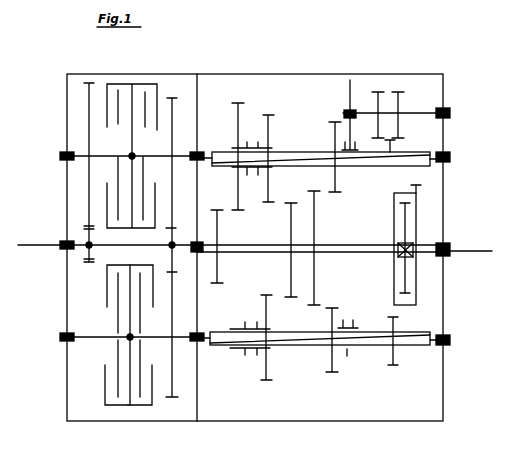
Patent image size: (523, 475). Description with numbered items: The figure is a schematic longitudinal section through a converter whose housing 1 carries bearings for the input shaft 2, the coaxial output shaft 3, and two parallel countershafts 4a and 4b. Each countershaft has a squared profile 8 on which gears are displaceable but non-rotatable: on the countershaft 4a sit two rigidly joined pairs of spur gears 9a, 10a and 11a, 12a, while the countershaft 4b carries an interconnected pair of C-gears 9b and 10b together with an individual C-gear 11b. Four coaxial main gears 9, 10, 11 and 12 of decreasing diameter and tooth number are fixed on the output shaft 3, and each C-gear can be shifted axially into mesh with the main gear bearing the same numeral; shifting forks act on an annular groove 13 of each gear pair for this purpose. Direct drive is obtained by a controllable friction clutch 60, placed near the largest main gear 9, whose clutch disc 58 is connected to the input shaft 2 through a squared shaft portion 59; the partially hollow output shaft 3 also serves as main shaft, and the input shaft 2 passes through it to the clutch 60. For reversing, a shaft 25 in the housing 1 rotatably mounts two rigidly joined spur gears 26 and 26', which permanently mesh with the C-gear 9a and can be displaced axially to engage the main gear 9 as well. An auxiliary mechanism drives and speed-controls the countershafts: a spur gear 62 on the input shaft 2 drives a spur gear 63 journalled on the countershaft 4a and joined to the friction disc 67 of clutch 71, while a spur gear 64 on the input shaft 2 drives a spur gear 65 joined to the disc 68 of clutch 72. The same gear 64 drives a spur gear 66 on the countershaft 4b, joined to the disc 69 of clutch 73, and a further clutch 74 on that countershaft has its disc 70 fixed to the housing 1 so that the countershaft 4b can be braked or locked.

The housing 1 is at (305, 74).
The input shaft 2 is at (22, 245).
The output shaft 3 is at (464, 252).
The countershaft 4a is at (186, 156).
The countershaft 4b is at (185, 338).
The squared profile 8 is at (413, 163).
The main gear 9 is at (421, 186).
The spur gear 9a is at (392, 148).
The C-gear 9b is at (394, 366).
The main gear 10 is at (314, 306).
The spur gear 10a is at (335, 121).
The C-gear 10b is at (334, 373).
The main gear 11 is at (291, 298).
The spur gear 11a is at (253, 143).
The individual C-gear 11b is at (266, 382).
The main gear 12 is at (218, 210).
The spur gear 12a is at (239, 104).
The annular groove 13 is at (268, 114).
The shaft 25 is at (437, 76).
The spur gear 26 is at (393, 92).
The spur gear 26' is at (411, 92).
The clutch disc 58 is at (408, 287).
The squared shaft portion 59 is at (414, 257).
The friction clutch 60 is at (412, 200).
The spur gear 62 is at (84, 227).
The spur gear 63 is at (91, 80).
The spur gear 64 is at (107, 267).
The spur gear 65 is at (173, 96).
The spur gear 66 is at (170, 398).
The friction disc 67 is at (118, 113).
The disc 68 is at (142, 192).
The disc 69 is at (138, 383).
The disc 70 is at (117, 307).
The friction clutch 71 is at (118, 90).
The friction clutch 72 is at (144, 92).
The clutch 73 is at (140, 404).
The clutch 74 is at (113, 404).